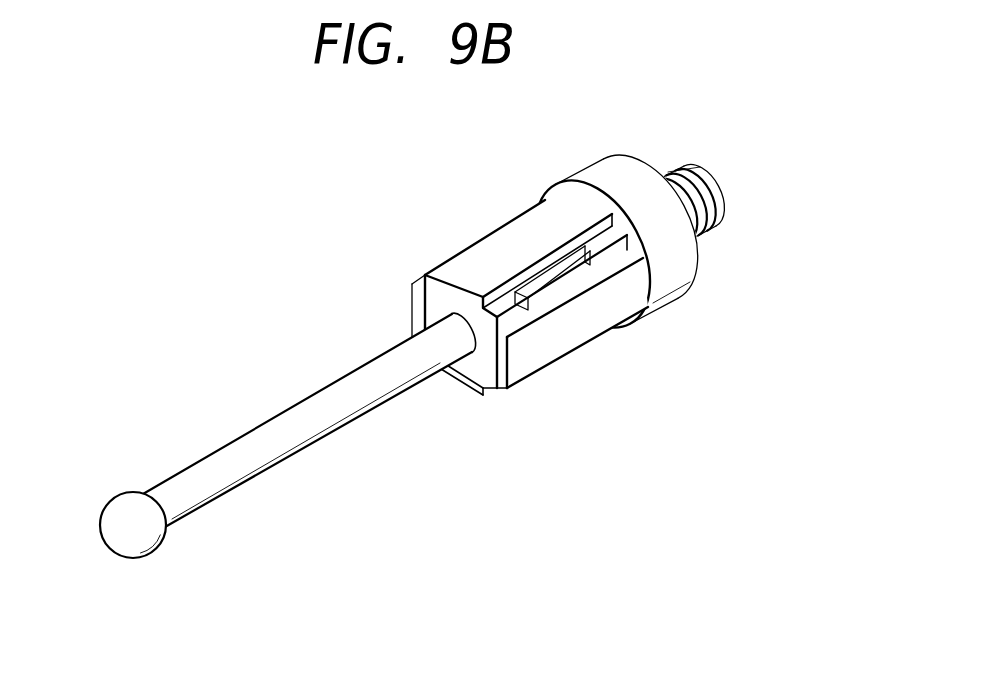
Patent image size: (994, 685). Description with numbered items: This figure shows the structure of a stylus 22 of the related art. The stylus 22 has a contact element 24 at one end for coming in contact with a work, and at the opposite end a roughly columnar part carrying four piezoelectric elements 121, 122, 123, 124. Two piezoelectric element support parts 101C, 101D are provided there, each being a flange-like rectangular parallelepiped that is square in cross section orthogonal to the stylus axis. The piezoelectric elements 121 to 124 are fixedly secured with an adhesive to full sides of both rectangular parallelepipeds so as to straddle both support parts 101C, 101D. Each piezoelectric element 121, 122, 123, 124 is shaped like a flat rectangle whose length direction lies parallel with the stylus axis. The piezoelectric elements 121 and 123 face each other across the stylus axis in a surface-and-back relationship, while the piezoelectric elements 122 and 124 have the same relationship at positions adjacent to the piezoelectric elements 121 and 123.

The stylus 22 is at (305, 428).
The contact element 24 is at (123, 502).
The piezoelectric element 121 is at (518, 228).
The piezoelectric element 122 is at (597, 325).
The piezoelectric element 123 is at (460, 377).
The piezoelectric element 124 is at (415, 309).
The piezoelectric element support part 101C is at (488, 348).
The piezoelectric element support part 101D is at (627, 244).